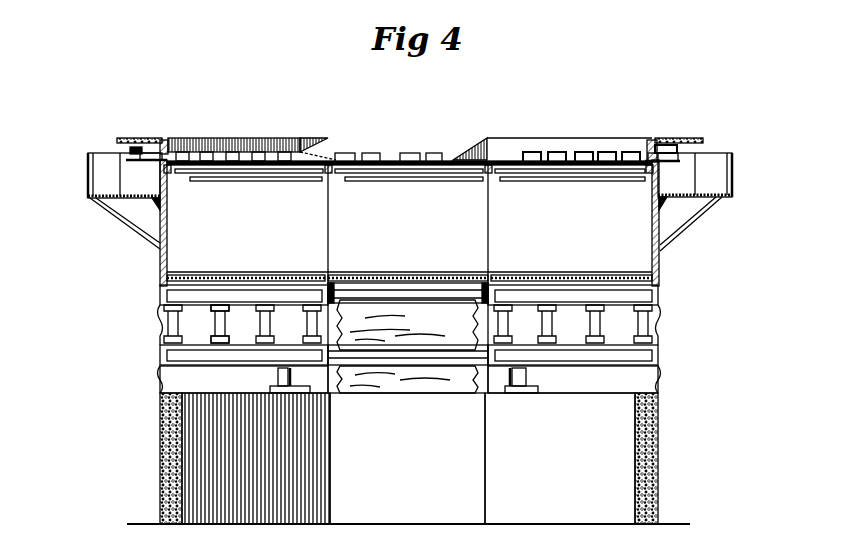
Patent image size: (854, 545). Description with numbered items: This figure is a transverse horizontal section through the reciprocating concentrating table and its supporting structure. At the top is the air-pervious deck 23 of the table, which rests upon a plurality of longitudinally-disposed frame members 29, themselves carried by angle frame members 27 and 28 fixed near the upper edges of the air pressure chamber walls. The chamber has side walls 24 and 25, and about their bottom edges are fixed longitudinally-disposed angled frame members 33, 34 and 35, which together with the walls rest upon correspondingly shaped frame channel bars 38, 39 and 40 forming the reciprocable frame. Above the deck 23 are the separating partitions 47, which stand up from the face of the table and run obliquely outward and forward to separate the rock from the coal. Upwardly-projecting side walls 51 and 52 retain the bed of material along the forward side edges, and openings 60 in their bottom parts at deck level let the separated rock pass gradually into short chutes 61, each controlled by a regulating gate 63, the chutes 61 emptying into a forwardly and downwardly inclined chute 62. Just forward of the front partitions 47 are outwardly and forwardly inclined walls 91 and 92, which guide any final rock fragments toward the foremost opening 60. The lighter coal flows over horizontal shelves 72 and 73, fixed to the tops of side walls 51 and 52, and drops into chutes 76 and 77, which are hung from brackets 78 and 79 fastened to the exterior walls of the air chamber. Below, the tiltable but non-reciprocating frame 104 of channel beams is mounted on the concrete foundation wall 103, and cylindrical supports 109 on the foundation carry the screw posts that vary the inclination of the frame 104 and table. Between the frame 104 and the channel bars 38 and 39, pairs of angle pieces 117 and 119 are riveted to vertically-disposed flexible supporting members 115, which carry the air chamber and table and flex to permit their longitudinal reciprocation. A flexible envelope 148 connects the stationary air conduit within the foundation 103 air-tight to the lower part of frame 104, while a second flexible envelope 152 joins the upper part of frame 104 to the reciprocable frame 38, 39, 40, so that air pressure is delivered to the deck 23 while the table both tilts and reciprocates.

The air-pervious deck 23 is at (448, 160).
The side wall 24 is at (160, 240).
The side wall 25 is at (660, 240).
The angle frame member 27 is at (180, 178).
The angle frame member 28 is at (600, 178).
The longitudinally-disposed frame member 29 is at (258, 172).
The angled frame member 33 is at (188, 275).
The angled frame member 34 is at (570, 275).
The angled frame member 35 is at (413, 275).
The frame channel bar 38 is at (160, 297).
The frame channel bar 39 is at (660, 296).
The frame channel bar 40 is at (366, 290).
The separating partition 47 is at (216, 156).
The side wall 51 is at (170, 140).
The side wall 52 is at (650, 140).
The opening 60 is at (266, 152).
The chute 61 is at (140, 177).
The inclined chute 62 is at (110, 160).
The regulating gate 63 is at (150, 138).
The shelf 72 is at (125, 138).
The shelf 73 is at (690, 140).
The chute 76 is at (93, 178).
The chute 77 is at (723, 170).
The bracket 78 is at (122, 221).
The bracket 79 is at (710, 221).
The inclined wall 91 is at (480, 148).
The inclined wall 92 is at (308, 150).
The foundation wall 103 is at (160, 437).
The frame 104 is at (160, 352).
The cylindrical support 109 is at (278, 379).
The flexible supporting member 115 is at (216, 323).
The angle piece 117 is at (232, 343).
The angle piece 119 is at (229, 308).
The flexible envelope 148 is at (160, 380).
The flexible envelope 152 is at (160, 327).